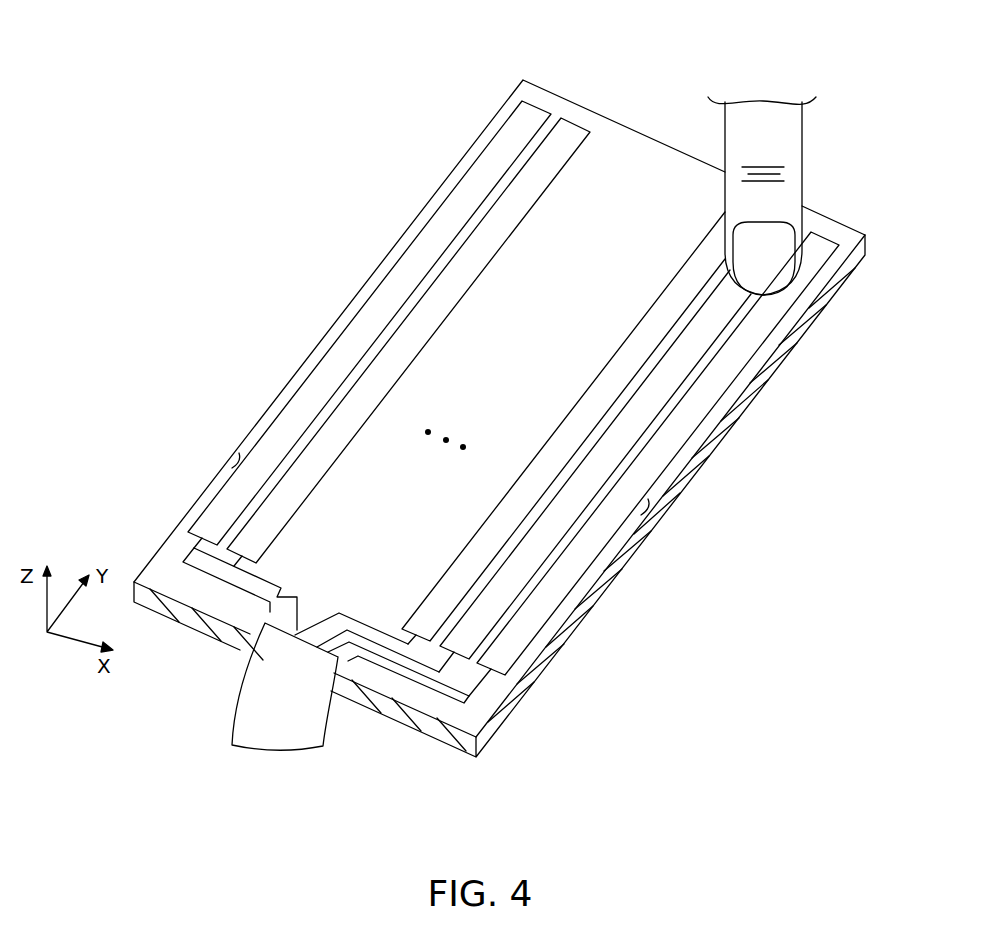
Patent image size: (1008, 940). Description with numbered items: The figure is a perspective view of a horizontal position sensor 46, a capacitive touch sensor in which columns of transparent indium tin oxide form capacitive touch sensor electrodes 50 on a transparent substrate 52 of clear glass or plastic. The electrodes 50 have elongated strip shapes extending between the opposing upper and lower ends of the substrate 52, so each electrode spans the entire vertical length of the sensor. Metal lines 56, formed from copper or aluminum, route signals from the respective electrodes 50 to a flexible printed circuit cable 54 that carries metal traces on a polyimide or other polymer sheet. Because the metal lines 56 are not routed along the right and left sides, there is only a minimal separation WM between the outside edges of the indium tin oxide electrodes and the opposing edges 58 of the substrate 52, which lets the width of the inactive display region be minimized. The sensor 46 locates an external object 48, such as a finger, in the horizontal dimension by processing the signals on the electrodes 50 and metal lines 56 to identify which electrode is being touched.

The horizontal position sensor 46 is at (379, 131).
The external object 48 is at (803, 137).
The capacitive touch sensor electrodes 50 is at (570, 132).
The substrate 52 is at (828, 314).
The flexible printed circuit cable 54 is at (243, 686).
The metal lines 56 is at (312, 372).
The edges of touch sensor substrate layer 58 is at (245, 436).
The separation WM is at (236, 464).